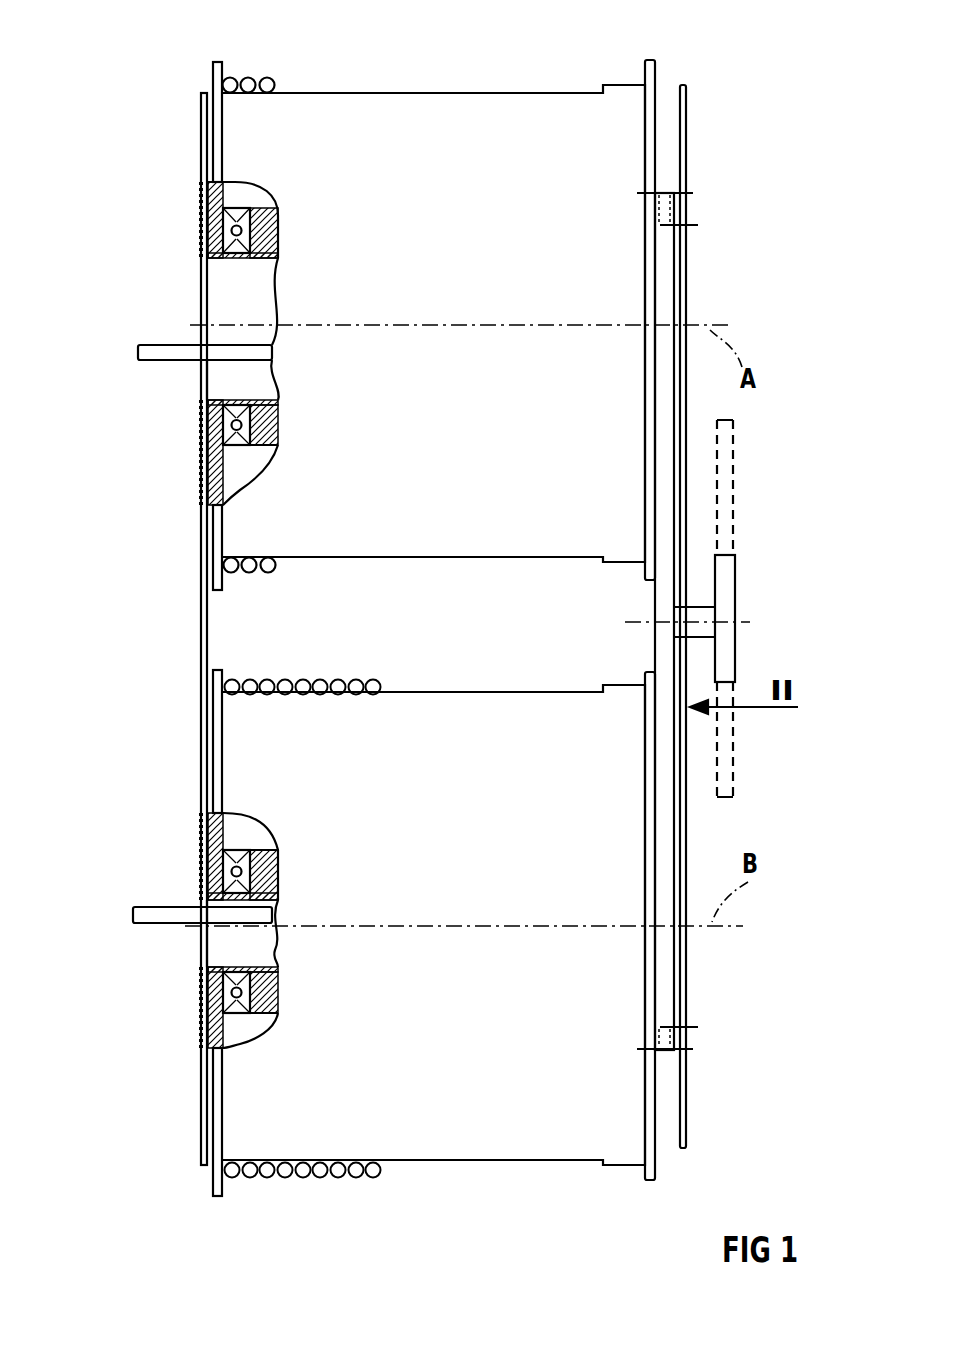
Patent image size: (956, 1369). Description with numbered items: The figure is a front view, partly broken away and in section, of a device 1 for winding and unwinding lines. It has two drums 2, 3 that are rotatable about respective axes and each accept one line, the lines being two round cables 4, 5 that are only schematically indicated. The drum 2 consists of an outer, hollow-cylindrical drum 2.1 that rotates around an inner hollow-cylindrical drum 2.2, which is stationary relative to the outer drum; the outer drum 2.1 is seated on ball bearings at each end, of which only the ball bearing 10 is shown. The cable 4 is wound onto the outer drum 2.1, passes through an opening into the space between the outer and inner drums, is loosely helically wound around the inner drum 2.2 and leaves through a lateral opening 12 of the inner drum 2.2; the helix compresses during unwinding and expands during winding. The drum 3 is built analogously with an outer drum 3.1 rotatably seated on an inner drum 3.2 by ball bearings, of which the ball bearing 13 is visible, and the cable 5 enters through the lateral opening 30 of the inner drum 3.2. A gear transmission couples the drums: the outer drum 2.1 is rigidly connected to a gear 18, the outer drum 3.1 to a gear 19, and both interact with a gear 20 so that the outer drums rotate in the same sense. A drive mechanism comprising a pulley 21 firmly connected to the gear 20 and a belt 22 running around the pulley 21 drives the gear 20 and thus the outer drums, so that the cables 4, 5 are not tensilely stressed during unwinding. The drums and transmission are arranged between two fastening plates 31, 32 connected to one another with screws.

The device 1 is at (150, 139).
The drum 2 is at (489, 115).
The drum 3 is at (518, 1135).
The cable 4 is at (232, 78).
The cable 5 is at (167, 908).
The outer drum 2.1 is at (208, 218).
The inner drum 2.2 is at (280, 230).
The outer drum 3.1 is at (210, 1020).
The inner drum 3.2 is at (267, 985).
The ball bearing 10 is at (213, 230).
The lateral opening 12 is at (201, 380).
The ball bearing 13 is at (225, 850).
The gear 18 is at (664, 222).
The gear 19 is at (662, 1032).
The gear 20 is at (664, 748).
The pulley 21 is at (729, 568).
The belt 22 is at (730, 482).
The lateral opening 30 is at (210, 945).
The fastening plate 31 is at (202, 123).
The fastening plate 32 is at (684, 98).